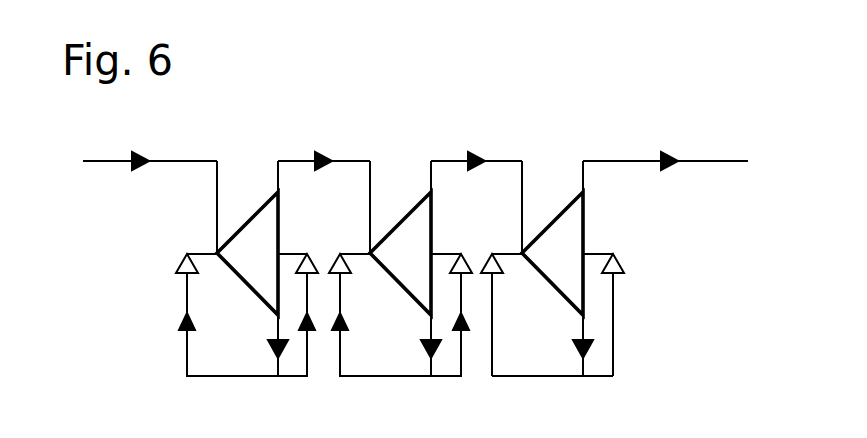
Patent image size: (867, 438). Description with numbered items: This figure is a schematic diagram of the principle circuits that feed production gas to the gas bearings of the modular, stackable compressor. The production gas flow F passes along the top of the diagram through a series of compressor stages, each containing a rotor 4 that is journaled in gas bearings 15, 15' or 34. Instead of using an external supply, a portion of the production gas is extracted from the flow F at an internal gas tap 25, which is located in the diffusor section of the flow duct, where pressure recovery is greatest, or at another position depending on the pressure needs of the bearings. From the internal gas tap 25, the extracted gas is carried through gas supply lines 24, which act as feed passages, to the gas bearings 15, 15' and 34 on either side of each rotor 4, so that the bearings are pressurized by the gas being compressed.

The rotor 4 is at (245, 265).
The gas bearing 15 is at (168, 240).
The gas bearing 15' is at (400, 263).
The gas bearing 34 is at (616, 256).
The gas supply line 24 is at (614, 298).
The internal gas tap 25 is at (583, 330).
The production gas flow F is at (502, 161).